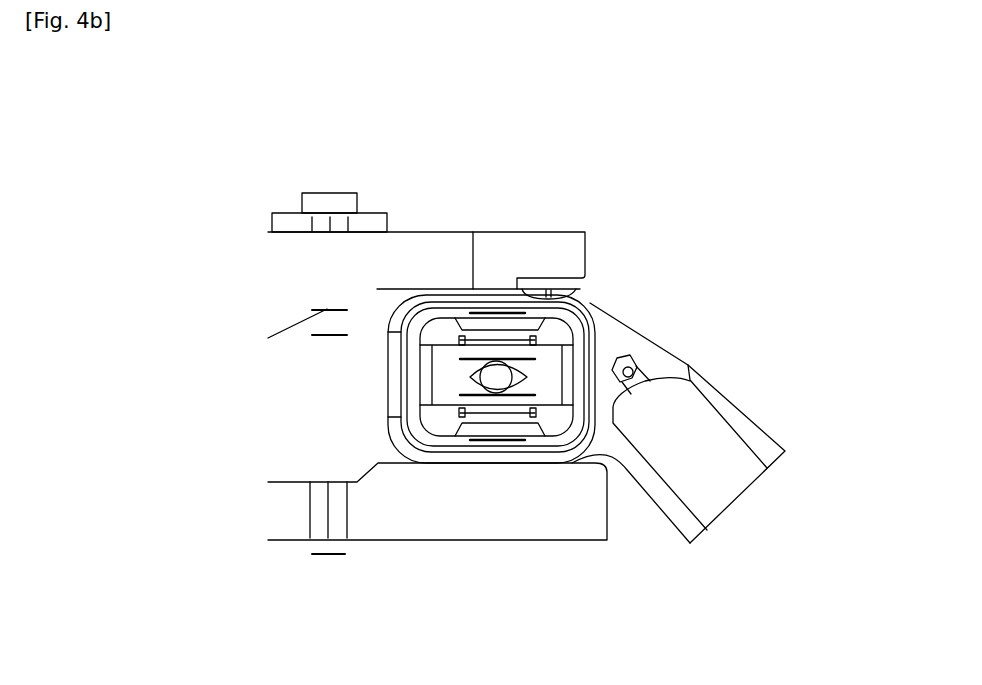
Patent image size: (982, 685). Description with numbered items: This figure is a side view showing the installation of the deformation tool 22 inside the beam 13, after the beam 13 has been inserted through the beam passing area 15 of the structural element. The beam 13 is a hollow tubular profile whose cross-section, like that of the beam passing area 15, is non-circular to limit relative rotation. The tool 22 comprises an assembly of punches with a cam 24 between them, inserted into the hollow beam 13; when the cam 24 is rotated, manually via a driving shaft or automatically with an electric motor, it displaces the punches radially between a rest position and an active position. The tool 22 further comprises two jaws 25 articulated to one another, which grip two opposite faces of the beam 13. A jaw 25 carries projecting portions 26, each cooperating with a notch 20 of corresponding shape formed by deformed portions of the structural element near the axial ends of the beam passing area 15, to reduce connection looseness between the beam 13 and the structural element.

The beam 13 is at (572, 405).
The beam passing area 15 is at (598, 335).
The notches 20 is at (573, 291).
The deformation tool 22 is at (443, 337).
The cam 24 is at (493, 377).
The jaws 25 is at (450, 252).
The projecting portions 26 is at (538, 289).